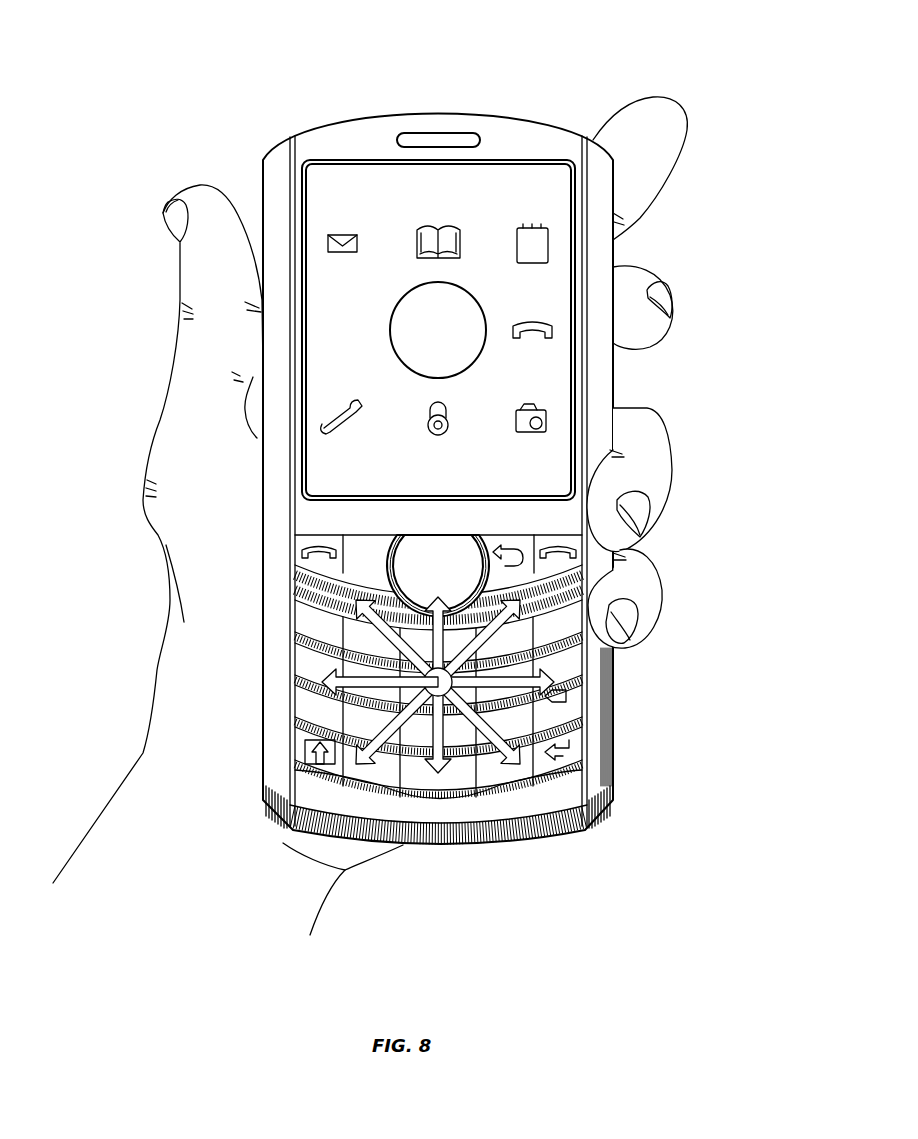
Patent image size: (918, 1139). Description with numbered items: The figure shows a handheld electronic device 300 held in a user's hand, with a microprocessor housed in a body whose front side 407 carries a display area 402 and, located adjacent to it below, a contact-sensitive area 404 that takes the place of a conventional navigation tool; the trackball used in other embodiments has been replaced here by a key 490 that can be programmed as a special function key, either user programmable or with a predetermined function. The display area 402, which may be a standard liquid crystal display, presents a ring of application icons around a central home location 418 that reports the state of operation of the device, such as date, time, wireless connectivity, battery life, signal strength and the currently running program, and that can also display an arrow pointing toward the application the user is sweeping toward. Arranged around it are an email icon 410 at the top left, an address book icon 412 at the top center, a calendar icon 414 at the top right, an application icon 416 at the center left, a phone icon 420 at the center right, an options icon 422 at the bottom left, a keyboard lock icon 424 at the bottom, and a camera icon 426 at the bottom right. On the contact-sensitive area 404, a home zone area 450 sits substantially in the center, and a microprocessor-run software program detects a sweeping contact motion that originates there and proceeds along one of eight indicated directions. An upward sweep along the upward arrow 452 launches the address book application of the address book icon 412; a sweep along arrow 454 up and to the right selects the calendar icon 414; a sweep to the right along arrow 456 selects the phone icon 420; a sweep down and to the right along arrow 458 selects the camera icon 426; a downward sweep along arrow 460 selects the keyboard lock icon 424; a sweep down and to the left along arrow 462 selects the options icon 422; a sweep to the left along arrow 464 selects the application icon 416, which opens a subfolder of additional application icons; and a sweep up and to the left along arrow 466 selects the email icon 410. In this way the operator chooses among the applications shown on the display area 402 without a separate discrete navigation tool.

The handheld electronic device 300 is at (568, 40).
The display area 402 is at (325, 197).
The contact-sensitive area 404 is at (592, 584).
The front side 407 is at (598, 165).
The email icon 410 is at (326, 238).
The address book icon 412 is at (430, 225).
The calendar icon 414 is at (550, 243).
The application icon 416 is at (314, 325).
The home location 418 is at (396, 303).
The phone icon 420 is at (553, 328).
The options icon 422 is at (330, 410).
The keyboard lock icon 424 is at (440, 435).
The camera icon 426 is at (548, 410).
The home zone area 450 is at (515, 698).
The upward arrow 452 is at (315, 563).
The arrow 454 is at (560, 612).
The arrow 456 is at (556, 690).
The arrow 458 is at (580, 783).
The arrow 460 is at (470, 787).
The arrow 462 is at (300, 760).
The arrow 464 is at (318, 682).
The arrow 466 is at (300, 600).
The key 490 is at (438, 548).